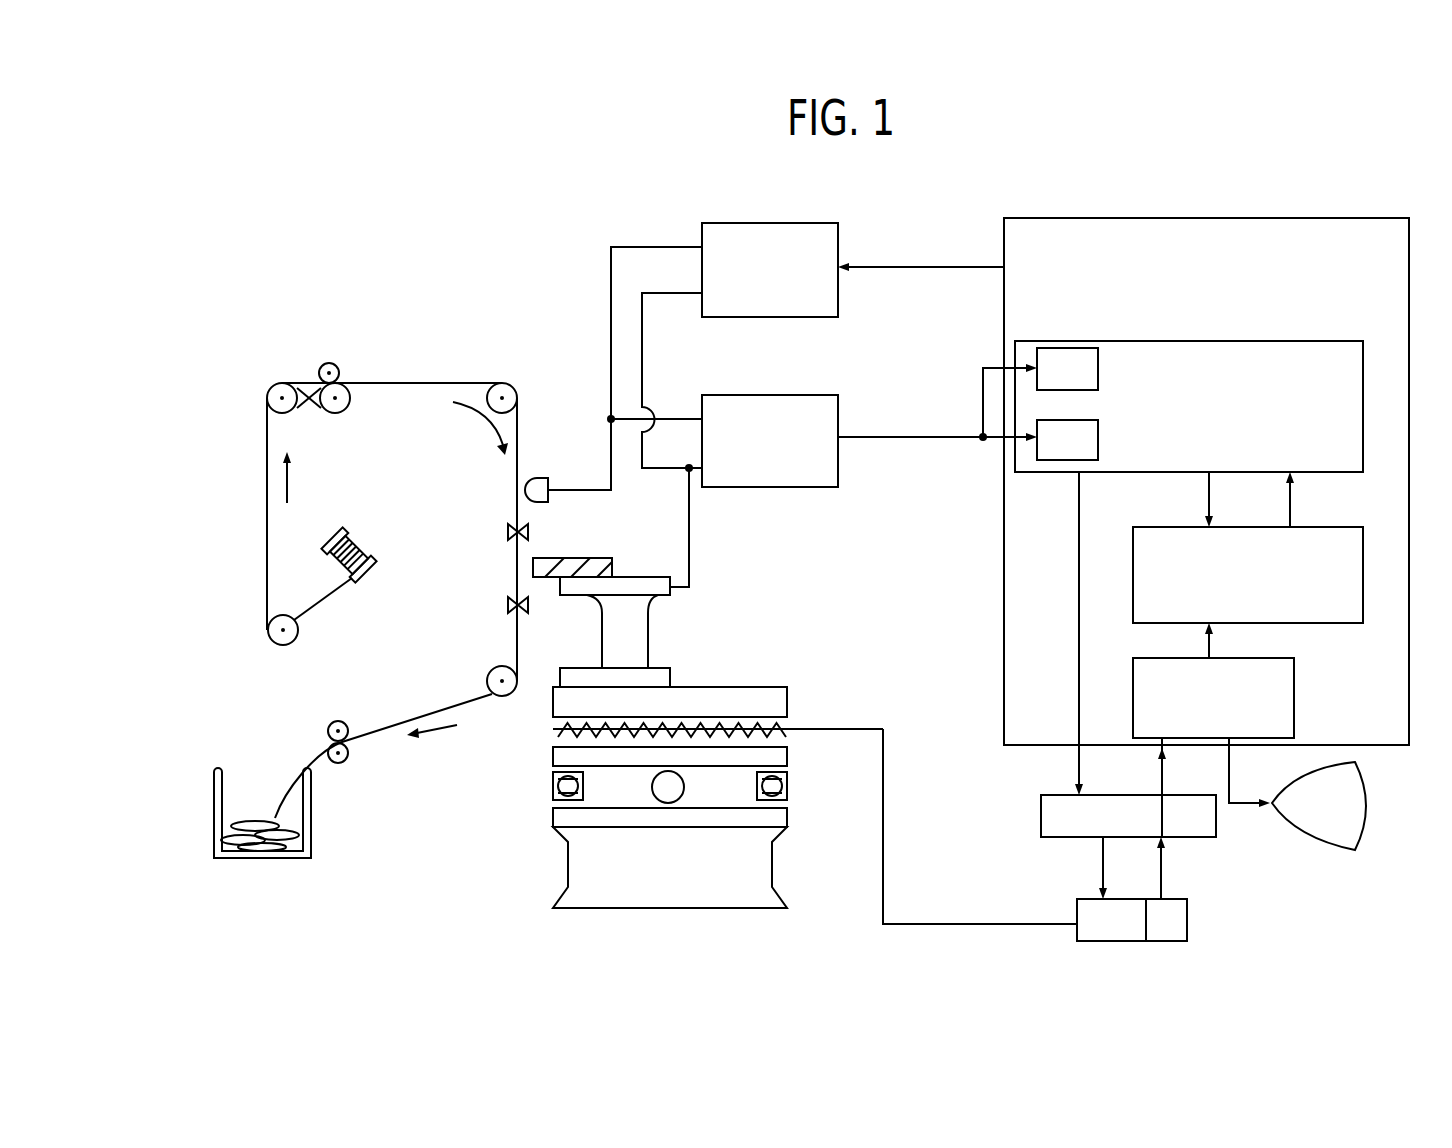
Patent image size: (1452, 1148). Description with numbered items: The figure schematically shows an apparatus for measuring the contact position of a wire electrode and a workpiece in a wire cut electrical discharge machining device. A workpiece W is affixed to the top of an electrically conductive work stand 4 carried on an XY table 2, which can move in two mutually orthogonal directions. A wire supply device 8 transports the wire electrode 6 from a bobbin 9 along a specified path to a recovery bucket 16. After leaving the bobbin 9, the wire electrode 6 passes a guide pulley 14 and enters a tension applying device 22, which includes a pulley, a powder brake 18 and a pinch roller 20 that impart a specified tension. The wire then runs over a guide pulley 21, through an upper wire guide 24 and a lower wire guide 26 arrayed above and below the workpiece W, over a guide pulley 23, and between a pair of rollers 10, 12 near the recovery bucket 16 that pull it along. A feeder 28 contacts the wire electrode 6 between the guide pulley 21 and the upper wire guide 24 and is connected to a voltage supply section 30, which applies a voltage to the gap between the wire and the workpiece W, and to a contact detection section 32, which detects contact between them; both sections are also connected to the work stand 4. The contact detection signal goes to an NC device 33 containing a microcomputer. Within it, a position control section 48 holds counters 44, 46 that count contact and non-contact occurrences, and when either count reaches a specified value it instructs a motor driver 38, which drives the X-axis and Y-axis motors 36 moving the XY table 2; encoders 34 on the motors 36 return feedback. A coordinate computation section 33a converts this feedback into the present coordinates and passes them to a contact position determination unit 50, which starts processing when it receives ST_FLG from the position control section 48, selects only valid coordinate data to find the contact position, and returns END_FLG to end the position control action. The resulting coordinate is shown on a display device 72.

The XY table 2 is at (532, 830).
The work stand 4 is at (648, 650).
The wire electrode 6 is at (382, 732).
The wire supply device 8 is at (438, 298).
The bobbin 9 is at (378, 562).
The roller 10 is at (340, 763).
The roller 12 is at (328, 728).
The guide pulley 14 is at (290, 644).
The recovery bucket 16 is at (268, 402).
The powder brake 18 is at (350, 403).
The pinch roller 20 is at (339, 372).
The guide pulley 21 is at (517, 392).
The tension applying device 22 is at (258, 360).
The guide pulley 23 is at (488, 678).
The upper wire guide 24 is at (508, 532).
The lower wire guide 26 is at (508, 605).
The feeder 28 is at (543, 478).
The voltage supply section 30 is at (740, 223).
The contact detection section 32 is at (765, 488).
The NC device 33 is at (1132, 218).
The coordinate computation section 33a is at (1294, 703).
The encoder 34 is at (1180, 899).
The motor 36 is at (668, 805).
The motor driver 38 is at (1041, 810).
The counter 44 is at (1058, 348).
The counter 46 is at (1085, 420).
The position control section 48 is at (1340, 341).
The contact position determination unit 50 is at (1363, 590).
The display device 72 is at (1298, 837).
The workpiece W is at (582, 557).